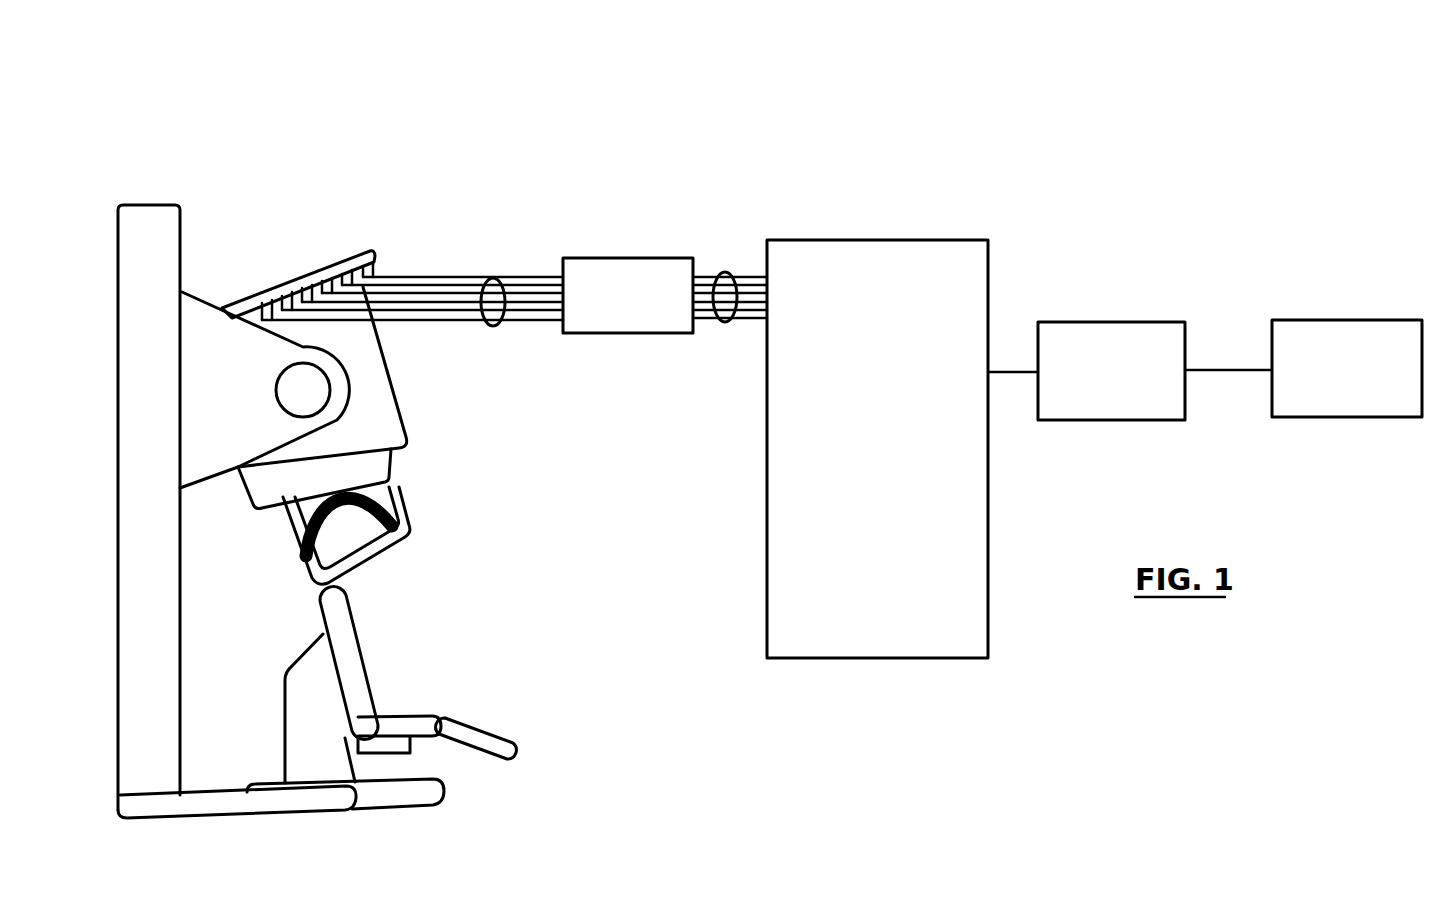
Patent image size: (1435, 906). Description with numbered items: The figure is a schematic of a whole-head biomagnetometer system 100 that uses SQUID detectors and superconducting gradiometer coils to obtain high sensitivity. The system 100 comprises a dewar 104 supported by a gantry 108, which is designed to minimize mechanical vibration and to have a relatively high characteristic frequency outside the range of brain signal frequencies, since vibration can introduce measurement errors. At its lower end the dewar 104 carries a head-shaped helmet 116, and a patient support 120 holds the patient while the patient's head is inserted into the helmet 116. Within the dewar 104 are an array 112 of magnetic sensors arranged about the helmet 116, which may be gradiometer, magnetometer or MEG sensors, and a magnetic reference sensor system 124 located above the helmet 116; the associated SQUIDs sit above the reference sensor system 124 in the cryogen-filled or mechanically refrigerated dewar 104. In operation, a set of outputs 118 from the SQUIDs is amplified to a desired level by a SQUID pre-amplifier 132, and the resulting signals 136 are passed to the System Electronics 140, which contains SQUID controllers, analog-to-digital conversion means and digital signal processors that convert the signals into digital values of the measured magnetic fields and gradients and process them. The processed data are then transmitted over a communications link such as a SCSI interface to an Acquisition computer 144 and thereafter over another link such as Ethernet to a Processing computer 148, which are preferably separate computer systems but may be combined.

The whole-head biomagnetometer system 100 is at (745, 114).
The dewar 104 is at (397, 395).
The gantry 108 is at (182, 233).
The array of magnetic sensors 112 is at (395, 480).
The head-shaped helmet 116 is at (358, 543).
The set of outputs 118 is at (493, 278).
The patient support 120 is at (423, 707).
The magnetic reference sensor system 124 is at (285, 523).
The SQUID pre-amplifier 132 is at (632, 258).
The resulting signals 136 is at (725, 273).
The System Electronics 140 is at (905, 462).
The Acquisition computer 144 is at (1098, 318).
The Processing computer 148 is at (1332, 318).